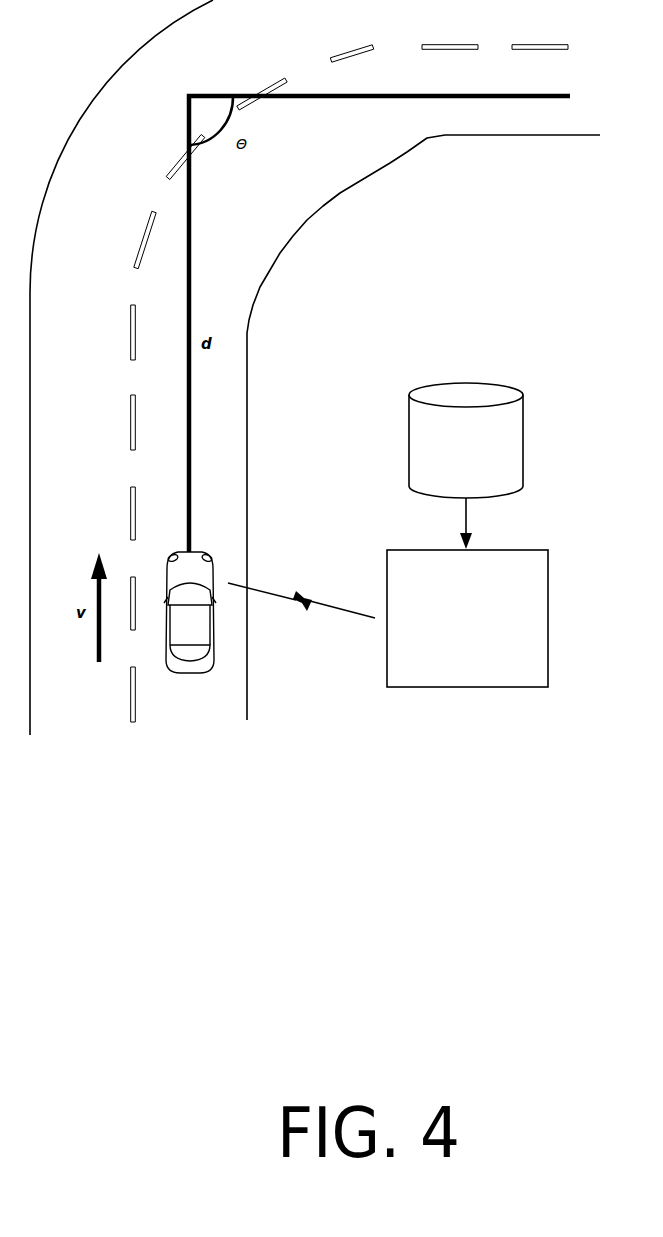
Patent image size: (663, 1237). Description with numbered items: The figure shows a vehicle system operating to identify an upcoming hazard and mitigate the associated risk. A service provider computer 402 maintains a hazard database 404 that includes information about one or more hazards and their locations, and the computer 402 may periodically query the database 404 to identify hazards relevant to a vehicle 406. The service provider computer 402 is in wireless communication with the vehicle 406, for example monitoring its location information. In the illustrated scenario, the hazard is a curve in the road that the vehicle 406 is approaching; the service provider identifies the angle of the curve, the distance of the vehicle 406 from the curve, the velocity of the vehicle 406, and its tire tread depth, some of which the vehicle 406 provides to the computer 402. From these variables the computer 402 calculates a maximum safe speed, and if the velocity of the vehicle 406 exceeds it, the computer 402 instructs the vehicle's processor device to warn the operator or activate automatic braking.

The service provider computer 402 is at (467, 618).
The hazard database 404 is at (466, 466).
The vehicle 406 is at (206, 552).